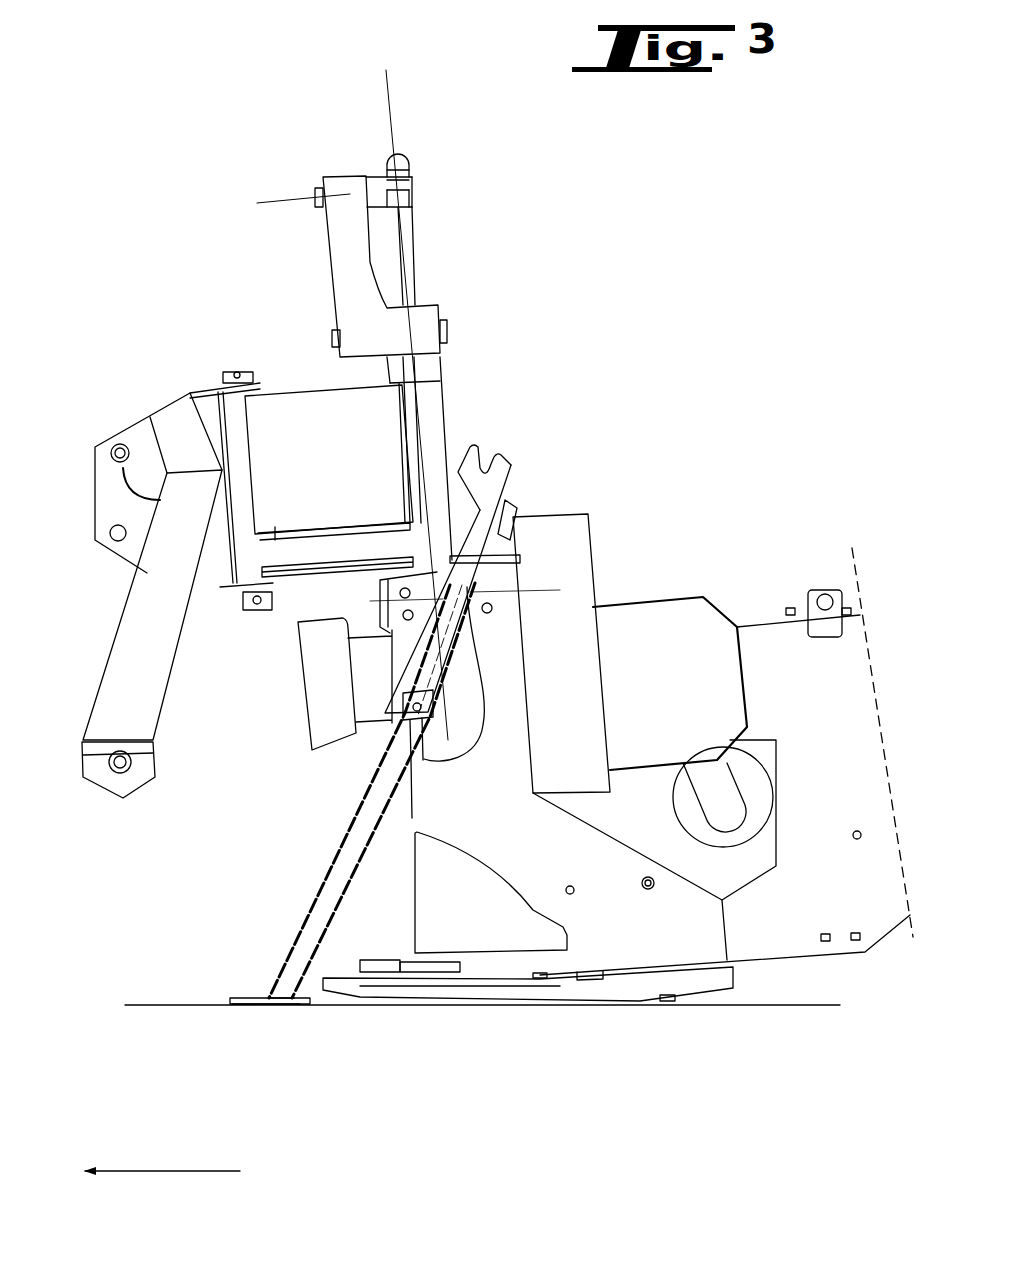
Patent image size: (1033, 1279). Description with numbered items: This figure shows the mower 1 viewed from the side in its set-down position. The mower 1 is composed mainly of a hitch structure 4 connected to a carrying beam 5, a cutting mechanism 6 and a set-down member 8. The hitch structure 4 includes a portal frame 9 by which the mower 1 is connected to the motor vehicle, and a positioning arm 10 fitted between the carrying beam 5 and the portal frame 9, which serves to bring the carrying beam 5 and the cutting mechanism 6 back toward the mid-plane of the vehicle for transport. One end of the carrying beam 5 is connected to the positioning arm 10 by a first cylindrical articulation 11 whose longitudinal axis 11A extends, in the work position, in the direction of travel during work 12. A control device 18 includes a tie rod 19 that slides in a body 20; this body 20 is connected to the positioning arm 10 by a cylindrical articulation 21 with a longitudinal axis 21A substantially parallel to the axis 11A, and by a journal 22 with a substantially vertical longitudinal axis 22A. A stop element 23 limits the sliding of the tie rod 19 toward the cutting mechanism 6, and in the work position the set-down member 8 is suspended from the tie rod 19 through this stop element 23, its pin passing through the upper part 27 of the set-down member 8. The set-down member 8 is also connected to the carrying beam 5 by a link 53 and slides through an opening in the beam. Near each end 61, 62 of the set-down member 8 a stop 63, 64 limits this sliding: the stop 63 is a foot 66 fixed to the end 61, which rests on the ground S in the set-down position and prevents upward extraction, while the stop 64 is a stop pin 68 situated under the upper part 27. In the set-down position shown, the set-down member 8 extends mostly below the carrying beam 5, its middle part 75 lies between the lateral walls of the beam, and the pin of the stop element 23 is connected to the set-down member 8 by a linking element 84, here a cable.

The mower 1 is at (720, 280).
The hitch structure 4 is at (103, 673).
The carrying beam 5 is at (387, 588).
The cutting mechanism 6 is at (405, 1005).
The set-down member 8 is at (317, 882).
The portal frame 9 is at (180, 413).
The positioning arm 10 is at (352, 478).
The first cylindrical articulation 11 is at (382, 635).
The longitudinal axis 11A is at (507, 592).
The direction of travel during work 12 is at (185, 1168).
The control device 18 is at (573, 380).
The tie rod 19 is at (412, 268).
The body 20 is at (377, 177).
The cylindrical articulation 21 is at (313, 212).
The longitudinal axis 21A is at (270, 200).
The journal 22 is at (340, 273).
The longitudinal axis 22A is at (392, 118).
The stop element 23 is at (421, 764).
The upper part 27 is at (523, 473).
The link 53 is at (527, 557).
The end 61 is at (250, 992).
The end 62 is at (507, 433).
The stop 63 is at (217, 998).
The stop 64 is at (510, 535).
The foot 66 is at (248, 1000).
The stop pin 68 is at (458, 548).
The middle part 75 is at (378, 737).
The linking element 84 is at (477, 752).
The ground S is at (740, 1005).